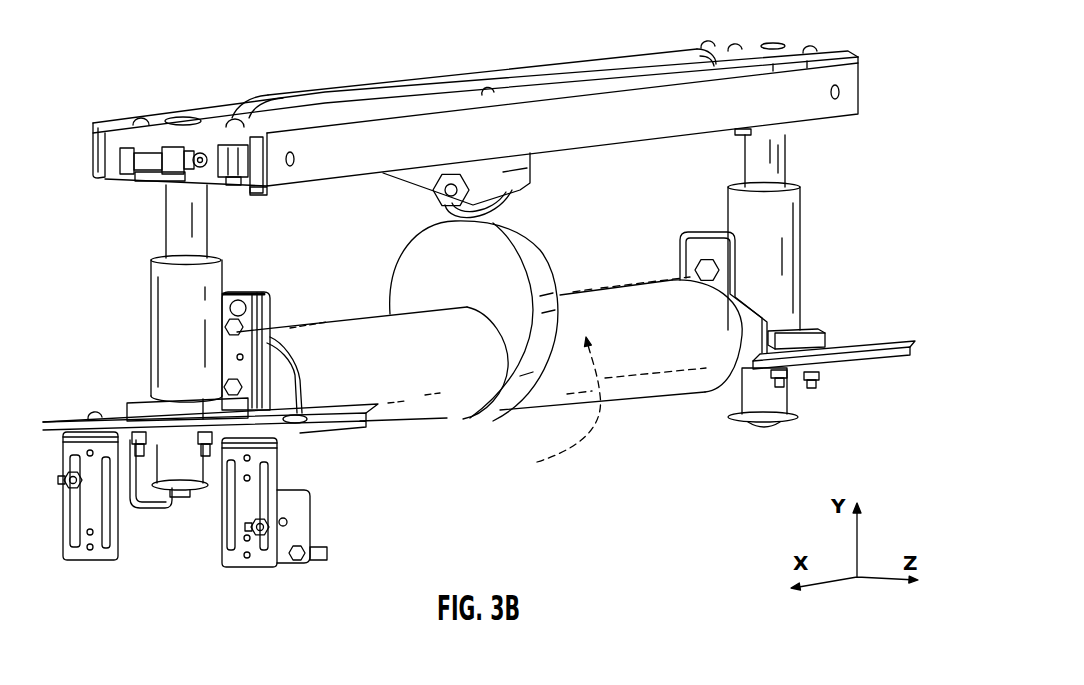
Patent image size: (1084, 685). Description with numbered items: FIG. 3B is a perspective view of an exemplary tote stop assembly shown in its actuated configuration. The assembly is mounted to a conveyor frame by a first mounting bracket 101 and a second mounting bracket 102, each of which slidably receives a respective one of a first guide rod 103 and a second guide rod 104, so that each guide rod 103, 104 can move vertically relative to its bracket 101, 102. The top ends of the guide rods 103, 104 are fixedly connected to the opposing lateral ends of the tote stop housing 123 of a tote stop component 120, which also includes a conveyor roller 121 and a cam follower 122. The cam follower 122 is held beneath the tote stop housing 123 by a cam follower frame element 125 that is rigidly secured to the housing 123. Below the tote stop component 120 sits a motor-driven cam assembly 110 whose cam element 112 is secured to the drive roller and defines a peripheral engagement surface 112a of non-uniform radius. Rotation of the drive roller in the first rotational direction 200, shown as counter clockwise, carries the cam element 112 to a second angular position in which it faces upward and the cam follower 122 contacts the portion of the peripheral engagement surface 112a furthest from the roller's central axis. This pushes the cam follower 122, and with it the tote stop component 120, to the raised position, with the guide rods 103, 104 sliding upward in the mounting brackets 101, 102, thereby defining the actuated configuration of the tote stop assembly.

The first mounting bracket 101 is at (807, 337).
The second mounting bracket 102 is at (135, 403).
The first guide rod 103 is at (780, 402).
The second guide rod 104 is at (190, 466).
The cam assembly 110 is at (652, 418).
The cam element 112 is at (418, 252).
The peripheral engagement surface 112a is at (533, 260).
The tote stop component 120 is at (876, 46).
The conveyor roller 121 is at (413, 93).
The cam follower 122 is at (503, 206).
The tote stop housing 123 is at (800, 107).
The cam follower frame element 125 is at (503, 174).
The first rotational direction 200 is at (597, 423).